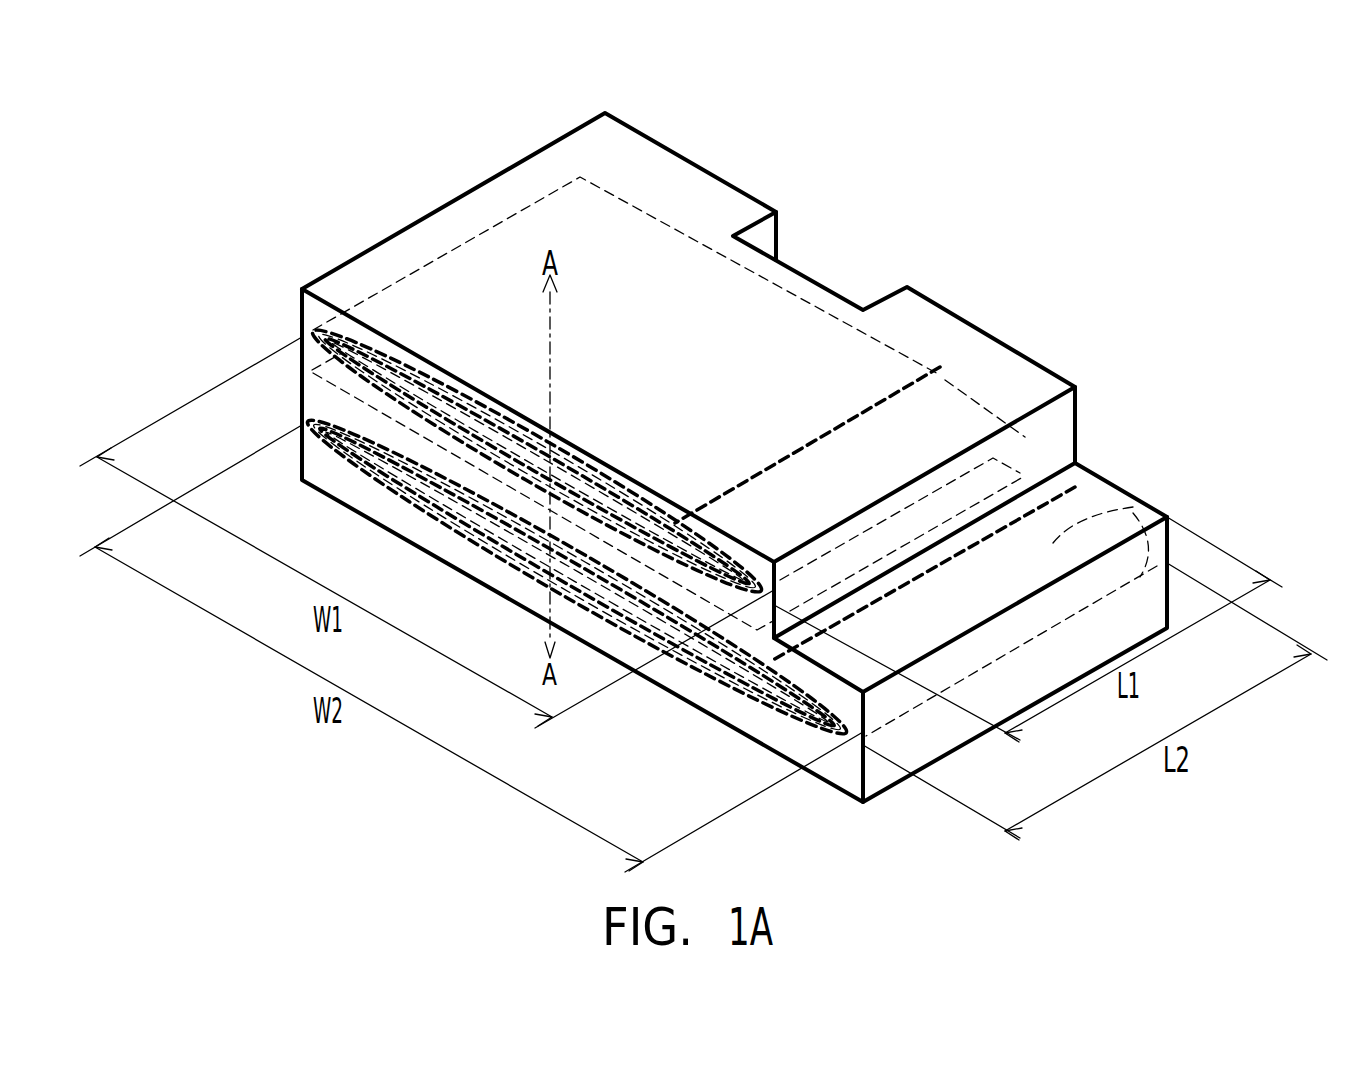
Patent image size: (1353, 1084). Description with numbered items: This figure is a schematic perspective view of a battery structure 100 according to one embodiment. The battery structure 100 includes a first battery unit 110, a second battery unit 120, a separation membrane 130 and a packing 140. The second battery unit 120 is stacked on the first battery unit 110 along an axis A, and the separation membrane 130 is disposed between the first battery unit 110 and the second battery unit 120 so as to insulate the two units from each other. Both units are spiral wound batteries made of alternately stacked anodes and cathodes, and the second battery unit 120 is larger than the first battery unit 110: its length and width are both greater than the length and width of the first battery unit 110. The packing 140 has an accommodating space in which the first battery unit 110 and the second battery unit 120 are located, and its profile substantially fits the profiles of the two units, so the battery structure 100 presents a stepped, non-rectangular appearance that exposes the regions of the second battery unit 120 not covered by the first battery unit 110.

The battery structure 100 is at (440, 127).
The first battery unit 110 is at (948, 392).
The second battery unit 120 is at (1130, 500).
The separation membrane 130 is at (1001, 465).
The packing 140 is at (933, 318).